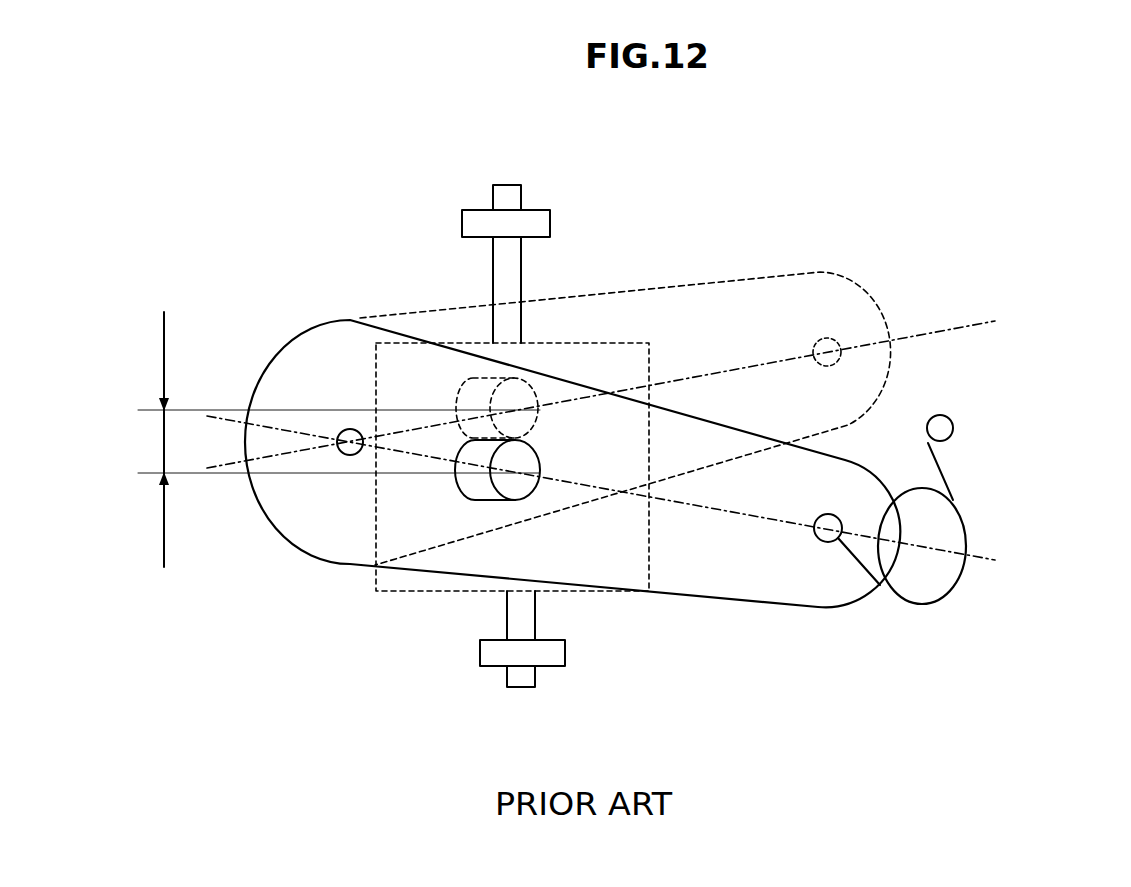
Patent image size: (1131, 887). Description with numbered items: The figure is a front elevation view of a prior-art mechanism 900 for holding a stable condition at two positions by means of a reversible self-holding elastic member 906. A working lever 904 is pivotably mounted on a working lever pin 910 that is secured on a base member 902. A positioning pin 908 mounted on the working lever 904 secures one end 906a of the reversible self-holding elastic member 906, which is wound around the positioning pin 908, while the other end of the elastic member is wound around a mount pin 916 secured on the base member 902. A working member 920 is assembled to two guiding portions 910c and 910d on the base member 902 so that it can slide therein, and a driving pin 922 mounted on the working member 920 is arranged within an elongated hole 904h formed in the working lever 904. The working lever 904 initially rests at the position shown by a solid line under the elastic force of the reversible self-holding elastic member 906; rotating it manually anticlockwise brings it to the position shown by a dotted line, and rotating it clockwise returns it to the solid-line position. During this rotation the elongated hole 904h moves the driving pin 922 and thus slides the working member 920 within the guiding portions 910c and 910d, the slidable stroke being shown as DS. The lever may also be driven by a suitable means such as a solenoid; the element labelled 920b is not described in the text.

The mechanism 900 is at (807, 622).
The base member 902 is at (958, 273).
The working lever 904 is at (693, 572).
The elongated hole 904h is at (476, 492).
The reversible self-holding elastic member 906 is at (944, 574).
The one end of the reversible self-holding elastic member 906a is at (826, 541).
The positioning pin 908 is at (825, 538).
The working lever pin 910 is at (348, 455).
The guiding portion 910c is at (532, 222).
The guiding portion 910d is at (500, 657).
The mount pin 916 is at (941, 427).
The working member 920 is at (513, 618).
The guide link 920b is at (953, 432).
The driving pin 922 is at (512, 492).
The slidable stroke DS is at (164, 440).